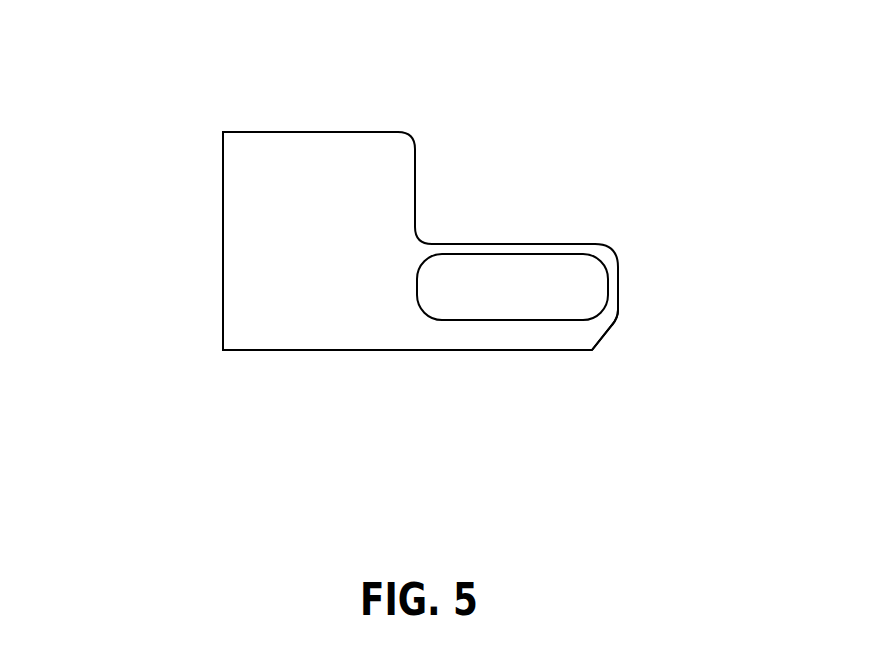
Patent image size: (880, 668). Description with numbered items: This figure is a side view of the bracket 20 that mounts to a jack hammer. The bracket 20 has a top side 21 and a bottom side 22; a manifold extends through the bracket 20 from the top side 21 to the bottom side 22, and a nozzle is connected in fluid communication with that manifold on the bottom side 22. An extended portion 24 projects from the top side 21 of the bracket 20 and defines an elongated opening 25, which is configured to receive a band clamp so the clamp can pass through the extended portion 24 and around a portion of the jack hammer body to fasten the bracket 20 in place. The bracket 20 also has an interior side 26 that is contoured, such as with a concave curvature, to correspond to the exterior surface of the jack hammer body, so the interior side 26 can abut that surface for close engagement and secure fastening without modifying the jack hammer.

The bracket 20 is at (657, 140).
The top side 21 is at (415, 177).
The bottom side 22 is at (223, 193).
The extended portion 24 is at (617, 320).
The elongated opening 25 is at (520, 300).
The interior side 26 is at (282, 350).